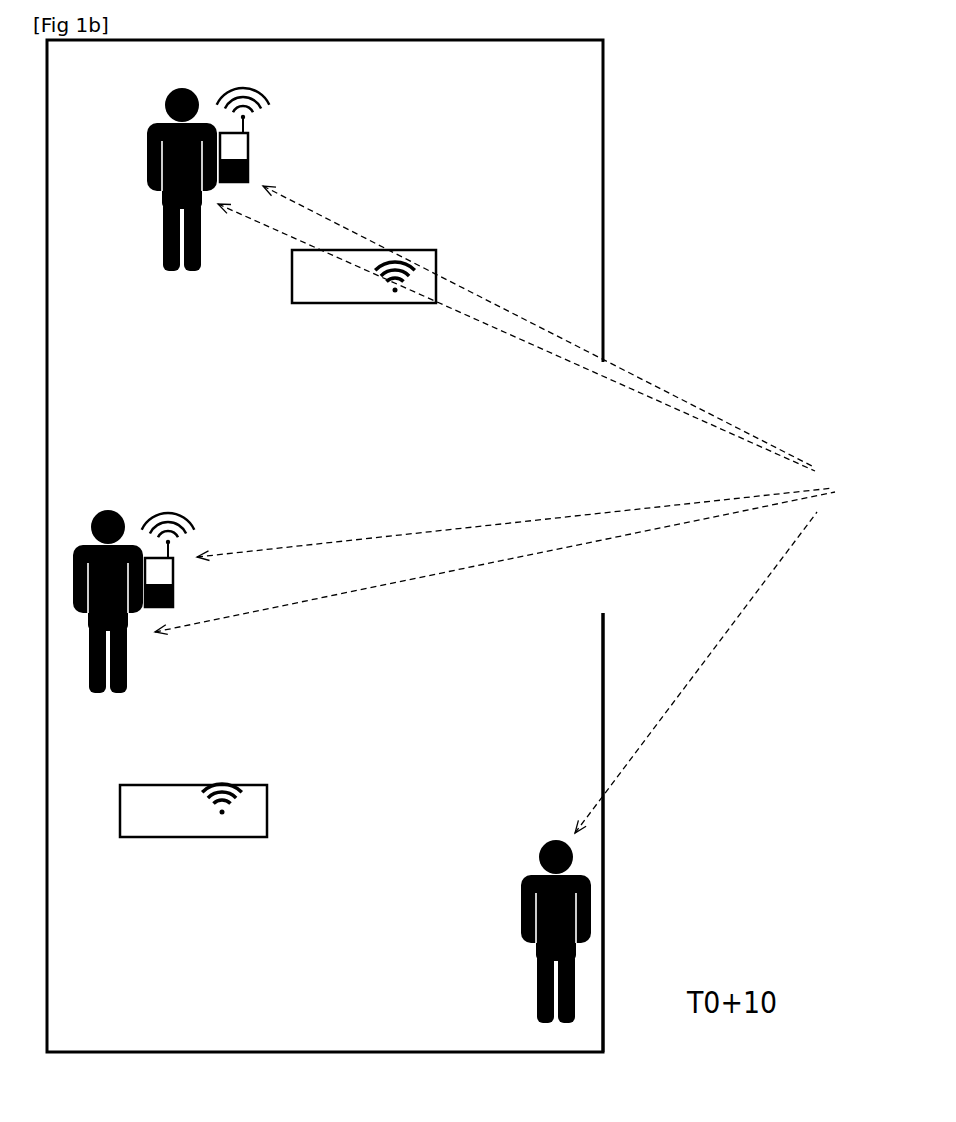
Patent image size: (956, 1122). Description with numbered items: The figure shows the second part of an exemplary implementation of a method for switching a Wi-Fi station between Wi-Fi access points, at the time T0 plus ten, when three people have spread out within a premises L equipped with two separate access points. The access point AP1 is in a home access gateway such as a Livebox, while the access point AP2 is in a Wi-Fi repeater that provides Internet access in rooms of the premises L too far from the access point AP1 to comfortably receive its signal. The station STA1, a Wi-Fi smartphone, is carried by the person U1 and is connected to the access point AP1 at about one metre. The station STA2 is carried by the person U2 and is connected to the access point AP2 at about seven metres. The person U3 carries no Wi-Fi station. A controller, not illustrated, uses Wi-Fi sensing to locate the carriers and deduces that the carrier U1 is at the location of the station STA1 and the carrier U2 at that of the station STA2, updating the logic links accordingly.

The carrier U1 is at (168, 179).
The carrier U2 is at (100, 585).
The carrier U3 is at (542, 931).
The station STA1 is at (273, 135).
The station STA2 is at (198, 560).
The access point AP1 is at (364, 276).
The access point AP2 is at (193, 810).
The premises L is at (605, 763).